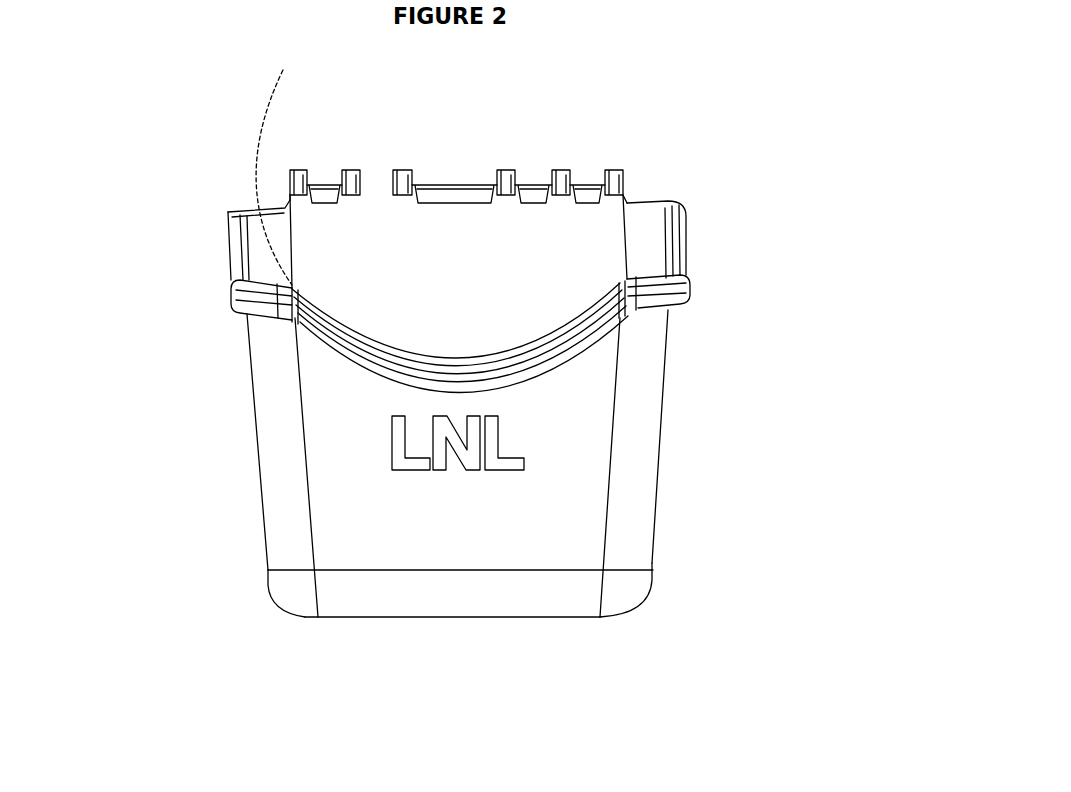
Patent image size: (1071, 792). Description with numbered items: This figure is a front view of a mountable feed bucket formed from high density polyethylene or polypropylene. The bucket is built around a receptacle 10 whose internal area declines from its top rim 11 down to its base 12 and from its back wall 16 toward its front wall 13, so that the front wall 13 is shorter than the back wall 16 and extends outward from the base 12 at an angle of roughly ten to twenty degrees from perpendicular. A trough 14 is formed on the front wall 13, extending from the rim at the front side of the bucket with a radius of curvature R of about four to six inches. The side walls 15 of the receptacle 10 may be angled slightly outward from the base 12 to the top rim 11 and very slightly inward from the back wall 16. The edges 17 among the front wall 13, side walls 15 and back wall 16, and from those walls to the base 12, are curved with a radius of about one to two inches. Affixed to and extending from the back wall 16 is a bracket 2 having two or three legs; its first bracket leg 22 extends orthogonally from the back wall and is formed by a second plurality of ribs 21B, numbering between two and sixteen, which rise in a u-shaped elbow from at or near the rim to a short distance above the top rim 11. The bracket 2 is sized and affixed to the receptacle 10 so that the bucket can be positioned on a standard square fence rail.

The receptacle 10 is at (760, 462).
The bracket 2 is at (539, 140).
The second plurality of ribs 21B is at (404, 178).
The first bracket leg 22 is at (443, 190).
The back wall 16 is at (592, 235).
The edges 17 is at (255, 230).
The top rim 11 is at (673, 249).
The side walls 15 is at (253, 454).
The trough 14 is at (493, 375).
The front wall 13 is at (522, 538).
The base 12 is at (576, 615).
The radius of curvature R is at (250, 74).